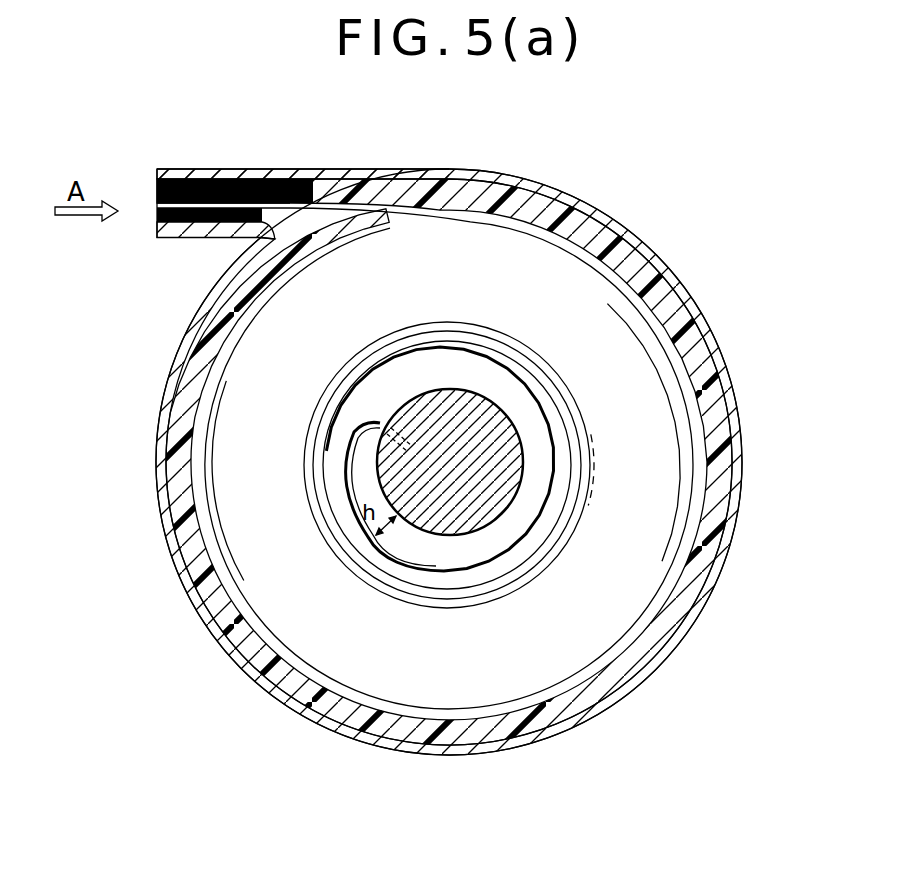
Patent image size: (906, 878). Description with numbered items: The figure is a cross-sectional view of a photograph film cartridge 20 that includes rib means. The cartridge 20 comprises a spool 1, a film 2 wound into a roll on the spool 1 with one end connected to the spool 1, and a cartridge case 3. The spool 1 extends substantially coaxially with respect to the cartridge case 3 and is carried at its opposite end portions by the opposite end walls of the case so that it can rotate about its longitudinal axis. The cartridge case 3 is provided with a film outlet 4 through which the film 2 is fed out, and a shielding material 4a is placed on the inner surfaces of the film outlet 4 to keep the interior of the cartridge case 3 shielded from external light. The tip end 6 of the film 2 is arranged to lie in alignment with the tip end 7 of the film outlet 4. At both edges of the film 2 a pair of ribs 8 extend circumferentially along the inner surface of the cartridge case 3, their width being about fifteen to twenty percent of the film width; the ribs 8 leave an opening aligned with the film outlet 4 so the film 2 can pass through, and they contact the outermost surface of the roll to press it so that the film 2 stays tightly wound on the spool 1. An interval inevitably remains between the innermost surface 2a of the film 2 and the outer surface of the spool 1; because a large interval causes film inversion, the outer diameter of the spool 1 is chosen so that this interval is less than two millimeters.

The spool 1 is at (494, 518).
The film 2 is at (688, 376).
The innermost surface 2a is at (427, 563).
The cartridge case 3 is at (690, 305).
The film outlet 4 is at (163, 243).
The shielding material 4a is at (158, 190).
The tip end of the film 6 is at (158, 213).
The tip end of the film outlet 7 is at (158, 176).
The ribs 8 is at (569, 207).
The photograph film cartridge 20 is at (241, 675).